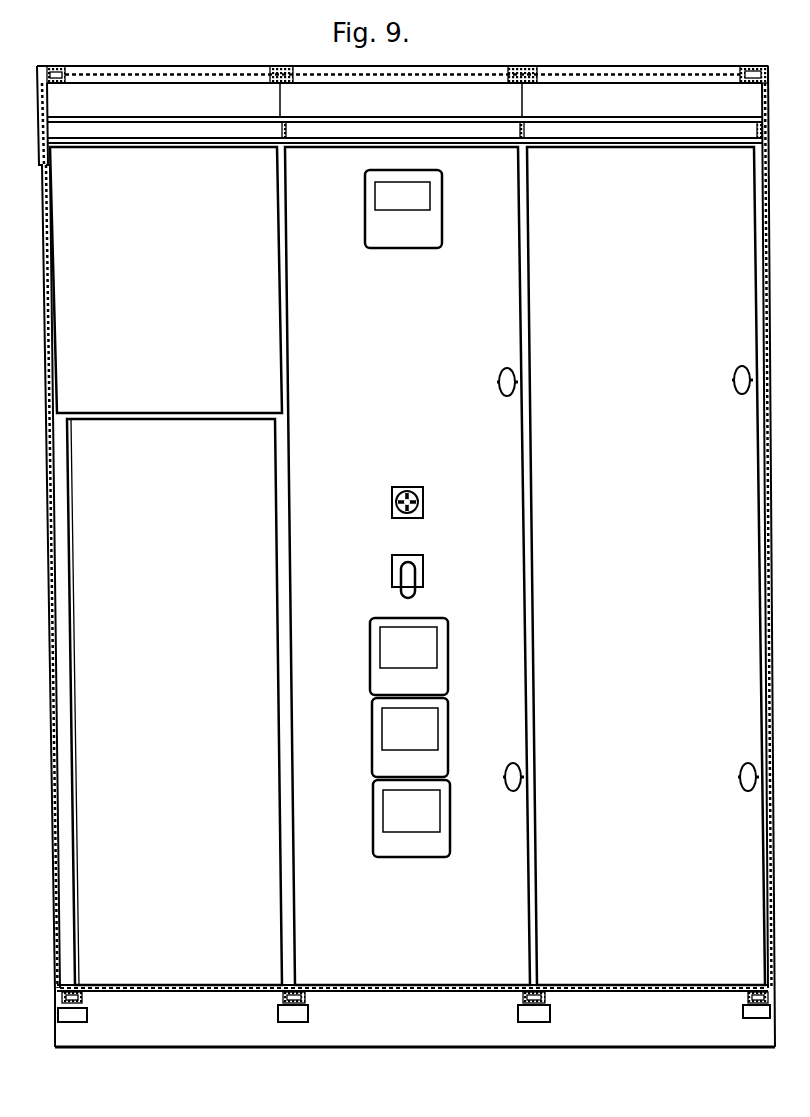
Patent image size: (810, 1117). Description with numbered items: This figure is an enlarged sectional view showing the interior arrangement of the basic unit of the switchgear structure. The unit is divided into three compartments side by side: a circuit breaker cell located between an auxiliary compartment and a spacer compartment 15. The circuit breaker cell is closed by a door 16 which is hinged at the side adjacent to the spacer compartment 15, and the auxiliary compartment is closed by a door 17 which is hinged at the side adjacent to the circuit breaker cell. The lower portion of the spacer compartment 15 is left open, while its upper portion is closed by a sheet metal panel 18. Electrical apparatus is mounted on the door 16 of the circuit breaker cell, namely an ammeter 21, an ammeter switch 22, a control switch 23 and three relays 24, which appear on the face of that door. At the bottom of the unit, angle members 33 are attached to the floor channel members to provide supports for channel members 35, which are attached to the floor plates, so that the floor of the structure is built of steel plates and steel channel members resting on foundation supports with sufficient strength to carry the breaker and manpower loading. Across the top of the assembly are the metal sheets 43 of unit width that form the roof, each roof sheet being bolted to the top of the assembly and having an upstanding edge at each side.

The spacer compartment 15 is at (177, 972).
The door 16 is at (426, 967).
The door 17 is at (647, 965).
The sheet metal panel 18 is at (62, 216).
The ammeter 21 is at (442, 222).
The ammeter switch 22 is at (423, 503).
The control switch 23 is at (423, 571).
The relays 24 is at (448, 661).
The angle member 33 is at (87, 1012).
The channel members 35 is at (82, 998).
The metal sheets 43 is at (192, 79).